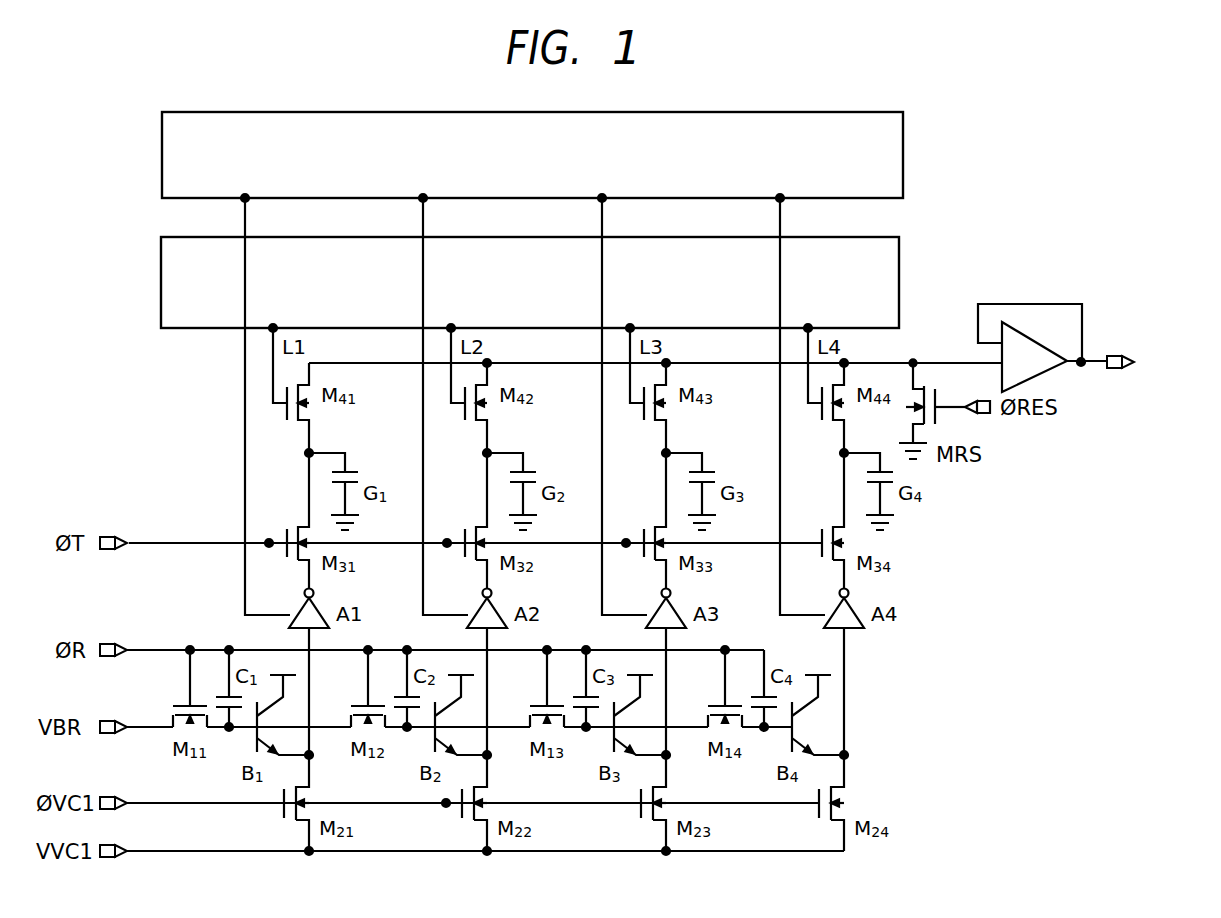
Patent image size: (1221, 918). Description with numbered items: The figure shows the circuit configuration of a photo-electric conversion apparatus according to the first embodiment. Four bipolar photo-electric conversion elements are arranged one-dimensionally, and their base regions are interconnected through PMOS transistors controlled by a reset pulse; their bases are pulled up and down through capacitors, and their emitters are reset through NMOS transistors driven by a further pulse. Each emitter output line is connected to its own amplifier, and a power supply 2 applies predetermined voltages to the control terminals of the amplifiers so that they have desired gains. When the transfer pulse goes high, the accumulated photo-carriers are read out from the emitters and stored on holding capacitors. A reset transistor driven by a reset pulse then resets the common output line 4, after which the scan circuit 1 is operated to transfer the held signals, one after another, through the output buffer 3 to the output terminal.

The scan circuit 1 is at (899, 278).
The power supply 2 is at (903, 158).
The output buffer 3 is at (1043, 372).
The output line 4 is at (913, 363).